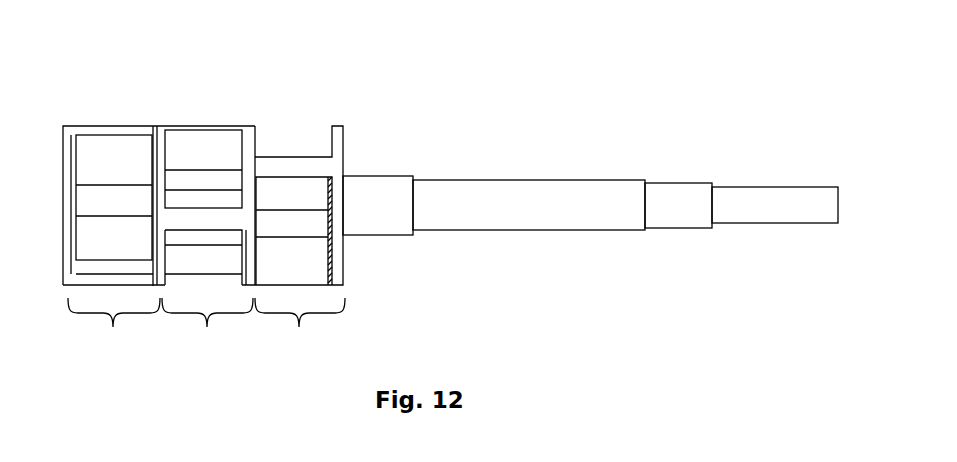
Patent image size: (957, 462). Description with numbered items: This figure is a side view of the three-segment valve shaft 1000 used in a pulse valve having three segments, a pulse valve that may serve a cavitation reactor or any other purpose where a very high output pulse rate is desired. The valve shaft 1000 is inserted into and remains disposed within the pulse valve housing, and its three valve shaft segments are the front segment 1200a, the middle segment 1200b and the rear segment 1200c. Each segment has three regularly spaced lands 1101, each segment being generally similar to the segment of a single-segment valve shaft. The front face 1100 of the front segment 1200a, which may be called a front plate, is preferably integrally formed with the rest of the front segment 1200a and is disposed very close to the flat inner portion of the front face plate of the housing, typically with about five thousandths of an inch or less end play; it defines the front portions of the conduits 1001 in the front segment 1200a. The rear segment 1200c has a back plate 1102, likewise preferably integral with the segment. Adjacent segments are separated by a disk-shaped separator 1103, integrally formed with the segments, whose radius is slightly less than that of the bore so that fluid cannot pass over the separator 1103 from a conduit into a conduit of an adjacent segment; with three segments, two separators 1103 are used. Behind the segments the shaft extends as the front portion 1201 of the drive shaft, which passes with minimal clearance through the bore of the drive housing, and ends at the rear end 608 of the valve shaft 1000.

The valve shaft 1000 is at (520, 81).
The front face 1100 is at (73, 128).
The conduits 1001 is at (127, 165).
The separator 1103 is at (247, 138).
The lands 1101 is at (297, 160).
The back plate 1102 is at (337, 242).
The front portion of the drive shaft 1201 is at (372, 193).
The rear end 608 is at (785, 188).
The front segment 1200a is at (115, 203).
The middle segment 1200b is at (208, 201).
The rear segment 1200c is at (354, 210).